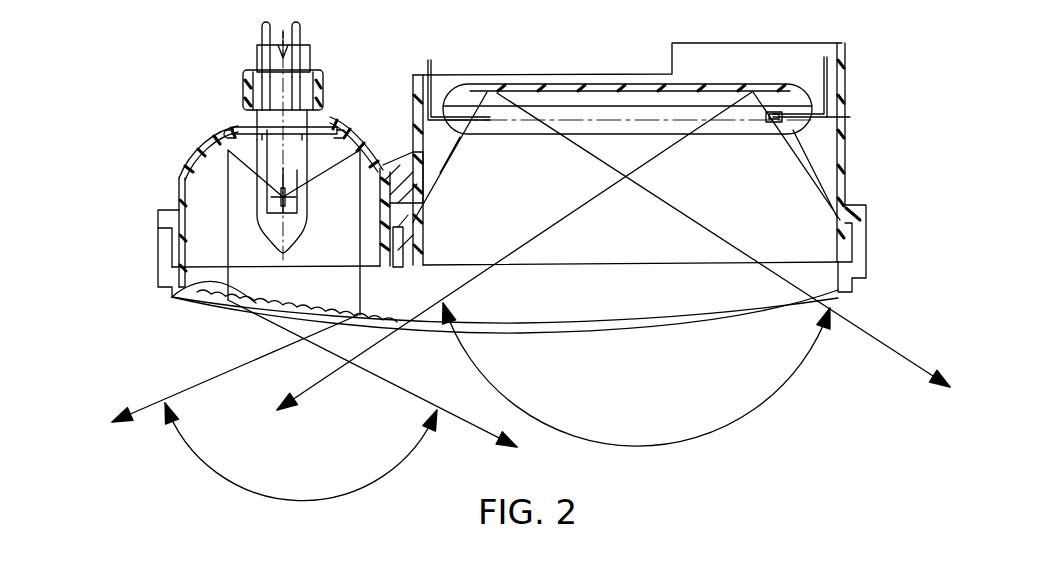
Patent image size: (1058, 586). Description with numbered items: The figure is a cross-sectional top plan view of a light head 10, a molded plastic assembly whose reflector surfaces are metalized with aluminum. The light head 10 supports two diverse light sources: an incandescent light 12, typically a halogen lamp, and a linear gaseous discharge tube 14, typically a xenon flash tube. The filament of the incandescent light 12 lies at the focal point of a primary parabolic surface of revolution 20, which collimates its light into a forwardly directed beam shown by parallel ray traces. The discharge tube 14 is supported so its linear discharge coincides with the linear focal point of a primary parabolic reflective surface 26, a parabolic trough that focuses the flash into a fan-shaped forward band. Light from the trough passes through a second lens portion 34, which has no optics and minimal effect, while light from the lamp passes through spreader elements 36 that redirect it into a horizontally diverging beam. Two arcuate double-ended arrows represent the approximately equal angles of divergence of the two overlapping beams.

The light head 10 is at (866, 120).
The incandescent light 12 is at (257, 208).
The linear gaseous discharge tube 14 is at (603, 106).
The primary parabolic surface of revolution 20 is at (187, 163).
The primary parabolic reflective surface 26 is at (762, 203).
The second portion of lens 34 is at (655, 330).
The spreader elements 36 is at (172, 297).